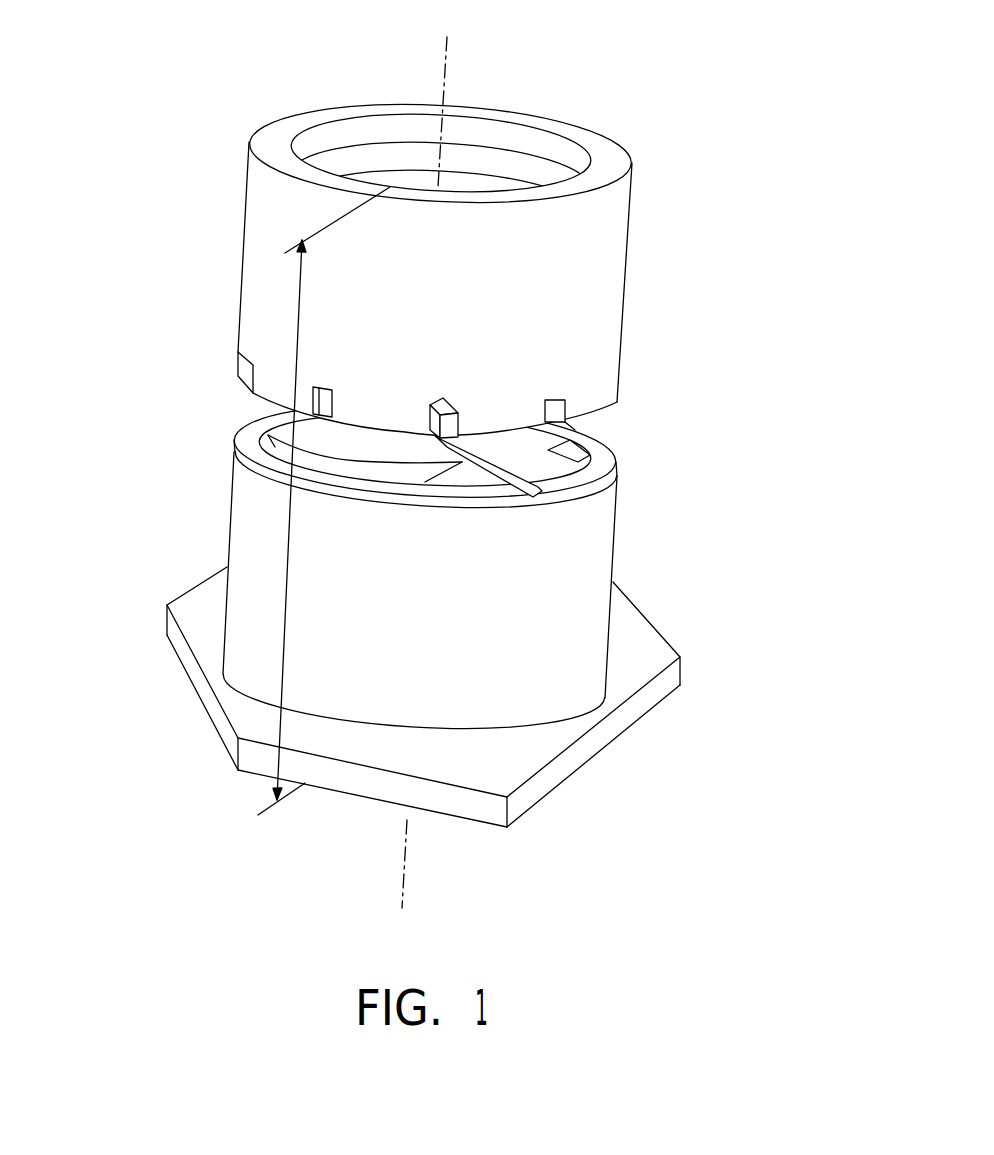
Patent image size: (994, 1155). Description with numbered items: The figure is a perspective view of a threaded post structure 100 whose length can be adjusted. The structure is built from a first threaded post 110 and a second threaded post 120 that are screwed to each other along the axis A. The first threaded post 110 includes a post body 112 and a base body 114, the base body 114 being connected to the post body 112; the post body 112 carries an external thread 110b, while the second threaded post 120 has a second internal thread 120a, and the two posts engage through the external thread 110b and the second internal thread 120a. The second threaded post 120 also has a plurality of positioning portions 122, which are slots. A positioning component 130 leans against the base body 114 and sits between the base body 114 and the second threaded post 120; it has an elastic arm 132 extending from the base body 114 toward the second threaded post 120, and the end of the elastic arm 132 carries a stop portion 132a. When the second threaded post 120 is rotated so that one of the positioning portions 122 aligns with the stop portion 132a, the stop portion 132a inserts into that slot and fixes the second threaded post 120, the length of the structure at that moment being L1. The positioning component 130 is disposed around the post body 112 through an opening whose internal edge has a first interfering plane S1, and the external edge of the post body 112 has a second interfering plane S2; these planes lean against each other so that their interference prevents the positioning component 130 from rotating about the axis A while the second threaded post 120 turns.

The threaded post structure 100 is at (434, 470).
The first threaded post 110 is at (400, 567).
The post body 112 is at (268, 435).
The base body 114 is at (255, 502).
The external thread 110b is at (378, 470).
The second threaded post 120 is at (400, 251).
The second internal thread 120a is at (486, 158).
The positioning portions 122 is at (442, 400).
The positioning component 130 is at (603, 457).
The elastic arm 132 is at (503, 483).
The stop portion 132a is at (418, 430).
The first interfering plane S1 is at (537, 473).
The second interfering plane S2 is at (510, 448).
The axis A is at (442, 60).
The length of the threaded post structure L1 is at (324, 501).